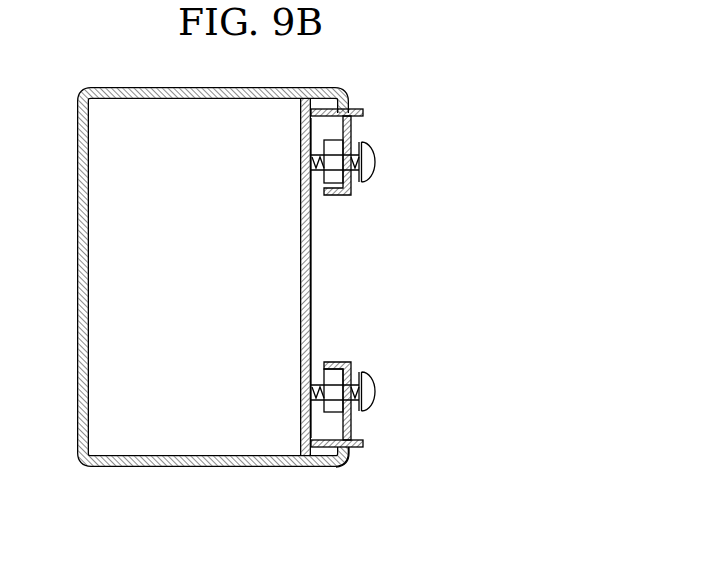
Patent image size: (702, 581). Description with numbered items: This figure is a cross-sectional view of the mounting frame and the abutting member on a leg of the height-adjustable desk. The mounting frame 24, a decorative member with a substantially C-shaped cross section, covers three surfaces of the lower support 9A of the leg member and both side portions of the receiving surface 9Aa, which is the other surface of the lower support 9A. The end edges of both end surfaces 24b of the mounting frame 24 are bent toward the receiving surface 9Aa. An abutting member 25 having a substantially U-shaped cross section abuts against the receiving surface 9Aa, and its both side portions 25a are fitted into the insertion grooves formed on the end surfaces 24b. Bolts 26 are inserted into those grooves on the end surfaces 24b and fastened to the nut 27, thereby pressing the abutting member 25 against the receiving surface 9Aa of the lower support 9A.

The lower support 9A is at (188, 437).
The receiving surface 9Aa is at (312, 260).
The mounting frame 24 is at (108, 468).
The end surfaces 24b is at (350, 458).
The abutting member 25 is at (312, 292).
The side portions 25a is at (357, 113).
The bolts 26 is at (370, 160).
The nut 27 is at (338, 182).